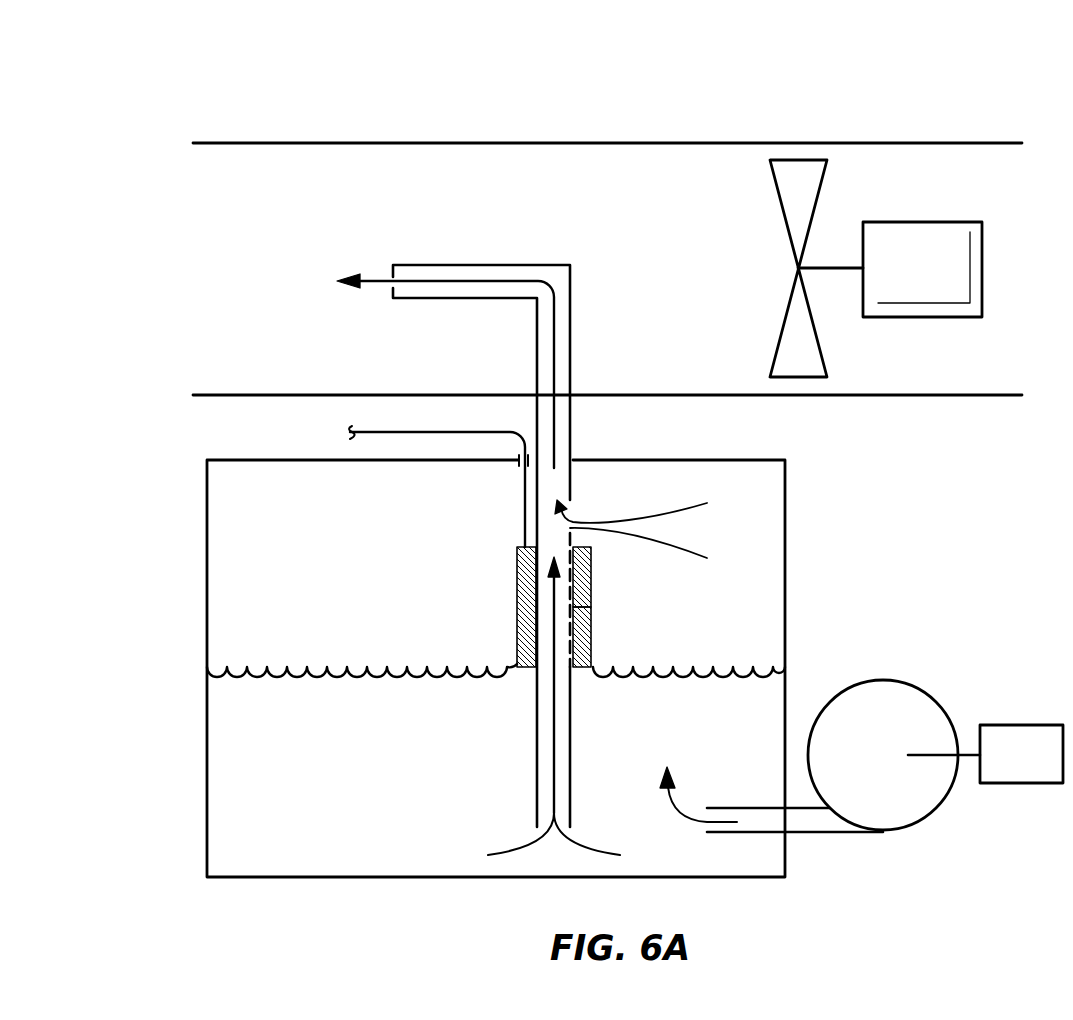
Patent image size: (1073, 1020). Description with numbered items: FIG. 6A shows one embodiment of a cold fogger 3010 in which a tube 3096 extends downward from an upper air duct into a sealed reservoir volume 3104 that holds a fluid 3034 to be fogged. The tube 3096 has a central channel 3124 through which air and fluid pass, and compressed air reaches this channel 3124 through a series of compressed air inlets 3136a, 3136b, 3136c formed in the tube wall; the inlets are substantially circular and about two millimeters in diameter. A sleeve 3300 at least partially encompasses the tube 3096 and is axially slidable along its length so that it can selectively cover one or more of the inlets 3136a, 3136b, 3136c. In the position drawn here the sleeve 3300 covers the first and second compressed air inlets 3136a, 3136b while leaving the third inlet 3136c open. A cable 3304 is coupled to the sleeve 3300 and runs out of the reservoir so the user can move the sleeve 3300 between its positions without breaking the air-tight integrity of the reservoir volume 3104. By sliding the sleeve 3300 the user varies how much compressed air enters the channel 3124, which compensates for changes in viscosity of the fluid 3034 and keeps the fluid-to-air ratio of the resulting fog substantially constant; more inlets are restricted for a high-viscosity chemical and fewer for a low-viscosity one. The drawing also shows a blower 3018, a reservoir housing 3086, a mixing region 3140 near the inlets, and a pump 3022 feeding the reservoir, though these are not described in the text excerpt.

The cold fogger 3010 is at (762, 99).
The blower 3018 is at (880, 187).
The tube 3096 is at (512, 263).
The channel 3124 is at (563, 337).
The cable 3304 is at (403, 432).
The reservoir 3086 is at (787, 538).
The fluid 3034 is at (251, 680).
The reservoir volume 3104 is at (247, 744).
The sleeve 3300 is at (517, 608).
The first compressed air inlet 3136a is at (573, 635).
The second compressed air inlet 3136b is at (573, 577).
The third compressed air inlet 3136c is at (567, 527).
The mixing region 3140 is at (553, 527).
The pump 3022 is at (827, 865).